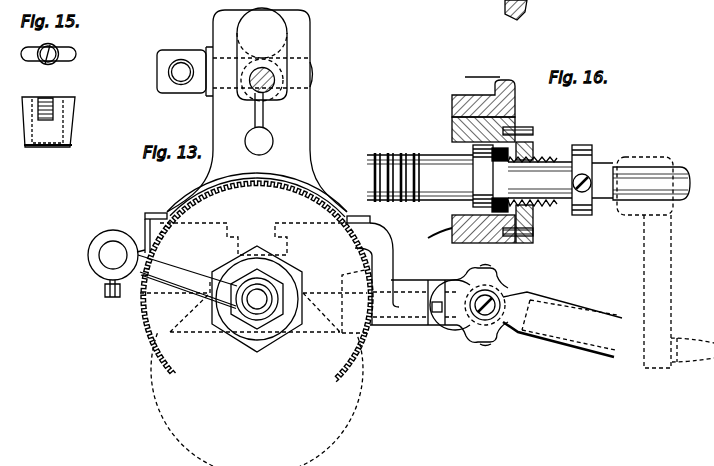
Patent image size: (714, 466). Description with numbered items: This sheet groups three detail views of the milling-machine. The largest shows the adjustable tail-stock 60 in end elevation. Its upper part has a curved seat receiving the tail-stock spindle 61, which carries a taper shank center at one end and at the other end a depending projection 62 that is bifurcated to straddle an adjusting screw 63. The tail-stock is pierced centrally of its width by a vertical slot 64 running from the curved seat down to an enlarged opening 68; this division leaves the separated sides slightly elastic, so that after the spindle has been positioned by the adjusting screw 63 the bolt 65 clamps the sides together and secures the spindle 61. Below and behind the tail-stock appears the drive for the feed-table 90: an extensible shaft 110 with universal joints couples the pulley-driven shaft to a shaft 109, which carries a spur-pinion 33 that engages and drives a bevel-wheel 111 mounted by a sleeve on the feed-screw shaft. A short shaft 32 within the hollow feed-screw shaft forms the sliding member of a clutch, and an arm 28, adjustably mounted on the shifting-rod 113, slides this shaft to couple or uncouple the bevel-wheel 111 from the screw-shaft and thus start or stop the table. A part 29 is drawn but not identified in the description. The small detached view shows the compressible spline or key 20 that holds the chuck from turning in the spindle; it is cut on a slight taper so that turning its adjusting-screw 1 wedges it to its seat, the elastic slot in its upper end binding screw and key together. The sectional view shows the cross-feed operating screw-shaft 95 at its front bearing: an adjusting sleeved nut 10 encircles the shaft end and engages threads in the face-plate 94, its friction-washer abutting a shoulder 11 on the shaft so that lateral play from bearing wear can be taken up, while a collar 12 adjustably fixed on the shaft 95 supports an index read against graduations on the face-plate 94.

In FIG. 15, the adjusting-screw 1 is at (50, 63).
In FIG. 15, the spline or key 20 is at (79, 49).
In FIG. 13, the adjustable tail-stock 60 is at (272, 167).
In FIG. 13, the tail-stock spindle 61 is at (260, 16).
In FIG. 13, the depending projection 62 is at (279, 59).
In FIG. 13, the adjusting screw 63 is at (253, 91).
In FIG. 13, the vertical slot 64 is at (264, 117).
In FIG. 13, the bolt 65 is at (173, 55).
In FIG. 13, the enlarged opening 68 is at (259, 141).
In FIG. 13, the bevel-wheel 111 is at (213, 196).
In FIG. 16, the bevel-wheel 111 is at (501, 7).
In FIG. 13, the feed-table 90 is at (150, 228).
In FIG. 13, the shifting-rod 113 is at (103, 257).
In FIG. 13, the arm 28 is at (187, 282).
In FIG. 13, the nut 29 is at (277, 271).
In FIG. 13, the short shaft 32 is at (257, 299).
In FIG. 13, the spur-pinion 33 is at (351, 294).
In FIG. 13, the shaft 109 is at (450, 285).
In FIG. 13, the extensible shaft 110 is at (562, 324).
In FIG. 16, the adjusting sleeved nut 10 is at (543, 208).
In FIG. 16, the face-plate 94 is at (533, 222).
In FIG. 16, the shoulder 11 is at (491, 178).
In FIG. 16, the operating screw-shaft 95 is at (540, 260).
In FIG. 16, the collar 12 is at (592, 159).